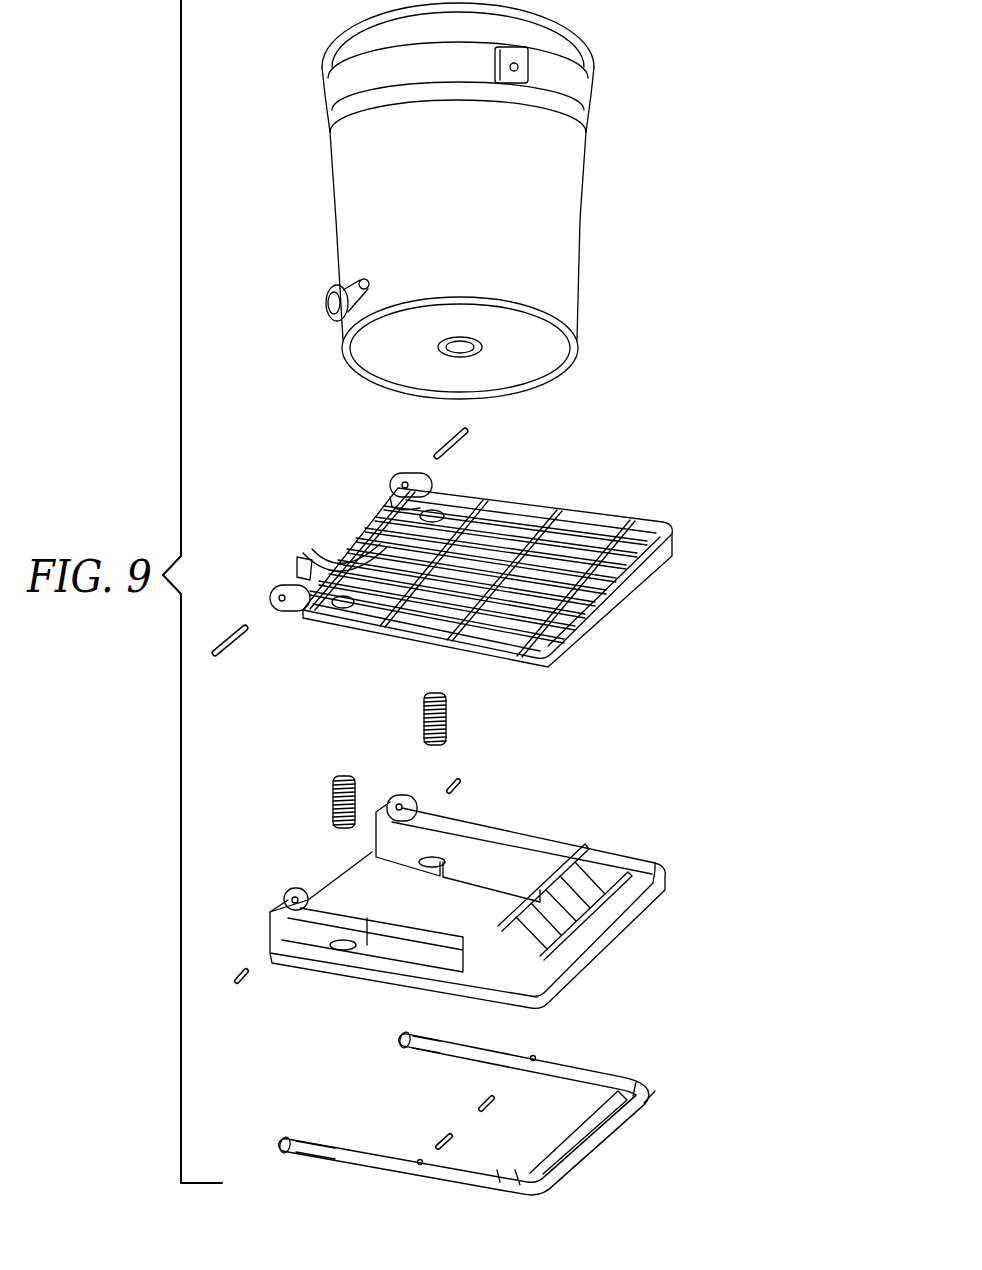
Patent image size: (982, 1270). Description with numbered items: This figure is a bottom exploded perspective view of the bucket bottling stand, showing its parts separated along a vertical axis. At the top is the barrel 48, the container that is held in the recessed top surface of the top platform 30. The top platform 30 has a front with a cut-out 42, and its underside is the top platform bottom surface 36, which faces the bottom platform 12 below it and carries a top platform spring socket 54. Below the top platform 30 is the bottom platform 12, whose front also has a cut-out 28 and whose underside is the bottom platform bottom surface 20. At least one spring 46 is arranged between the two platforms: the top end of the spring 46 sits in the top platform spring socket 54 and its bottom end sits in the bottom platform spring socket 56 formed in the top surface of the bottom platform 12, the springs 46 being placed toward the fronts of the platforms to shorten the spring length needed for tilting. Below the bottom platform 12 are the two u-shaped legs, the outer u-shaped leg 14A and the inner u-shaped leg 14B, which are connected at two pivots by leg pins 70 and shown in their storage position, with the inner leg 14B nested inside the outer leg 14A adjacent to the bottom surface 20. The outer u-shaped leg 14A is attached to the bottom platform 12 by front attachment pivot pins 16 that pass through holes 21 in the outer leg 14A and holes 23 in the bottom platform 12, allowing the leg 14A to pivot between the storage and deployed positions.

The barrel 48 is at (566, 212).
The top platform spring socket 54 is at (470, 503).
The top platform 30 is at (499, 563).
The cut-out 42 is at (326, 534).
The top platform bottom surface 36 is at (615, 593).
The spring 46 is at (447, 718).
The front attachment pivot pin 16 is at (453, 778).
The hole 23 is at (410, 827).
The bottom platform spring socket 56 is at (437, 857).
The bottom platform 12 is at (505, 883).
The cut-out 28 is at (336, 874).
The bottom platform bottom surface 20 is at (623, 897).
The hole 21 is at (407, 1042).
The leg pin 70 is at (485, 1100).
The outer u-shaped leg 14A is at (625, 1113).
The inner u-shaped leg 14B is at (575, 1143).